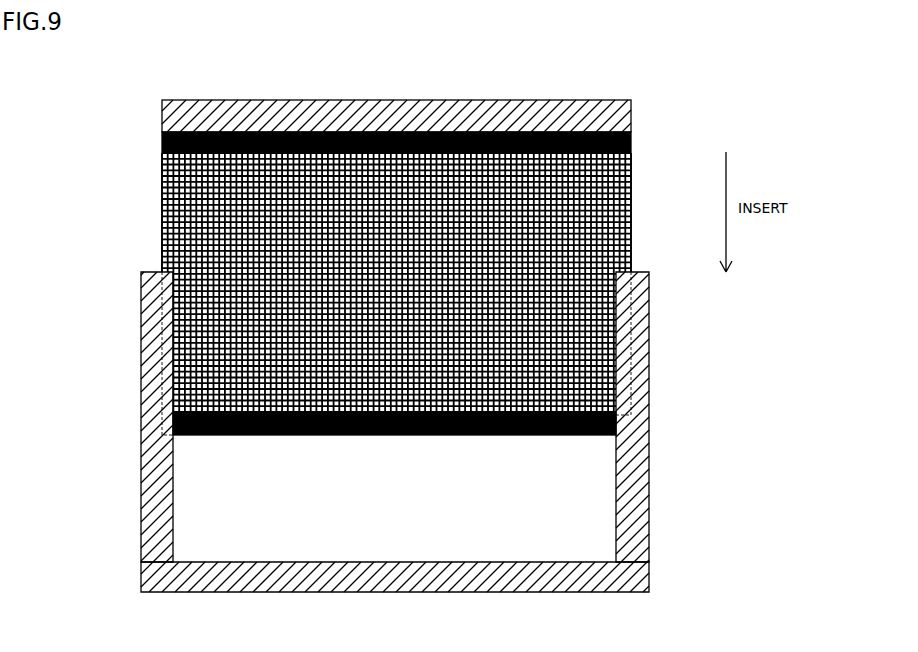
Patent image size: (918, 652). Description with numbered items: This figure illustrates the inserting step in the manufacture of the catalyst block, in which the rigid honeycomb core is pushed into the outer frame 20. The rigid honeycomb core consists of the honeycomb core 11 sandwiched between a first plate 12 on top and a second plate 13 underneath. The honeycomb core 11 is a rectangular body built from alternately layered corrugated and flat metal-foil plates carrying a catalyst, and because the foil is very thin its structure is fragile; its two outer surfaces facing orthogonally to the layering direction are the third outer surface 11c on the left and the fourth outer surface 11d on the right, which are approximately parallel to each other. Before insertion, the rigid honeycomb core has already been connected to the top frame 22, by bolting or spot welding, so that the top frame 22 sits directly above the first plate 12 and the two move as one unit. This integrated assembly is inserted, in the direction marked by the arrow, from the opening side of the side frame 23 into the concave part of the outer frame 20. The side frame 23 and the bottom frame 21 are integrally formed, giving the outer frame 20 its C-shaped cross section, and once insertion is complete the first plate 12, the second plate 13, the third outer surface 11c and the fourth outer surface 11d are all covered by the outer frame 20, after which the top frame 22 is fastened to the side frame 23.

The honeycomb core 11 is at (395, 321).
The third outer surface 11c is at (162, 245).
The fourth outer surface 11d is at (631, 217).
The first plate 12 is at (259, 132).
The second plate 13 is at (430, 435).
The outer frame 20 is at (339, 318).
The bottom frame 21 is at (395, 545).
The top frame 22 is at (387, 130).
The side frame 23 is at (162, 474).